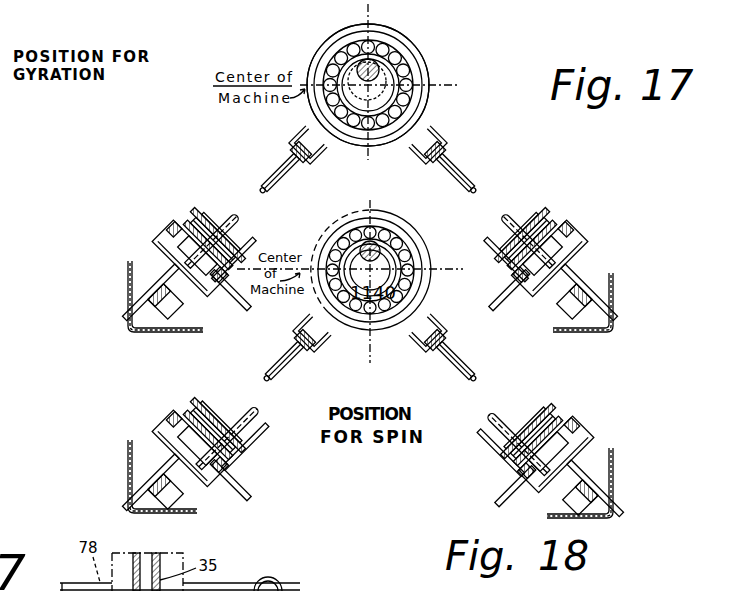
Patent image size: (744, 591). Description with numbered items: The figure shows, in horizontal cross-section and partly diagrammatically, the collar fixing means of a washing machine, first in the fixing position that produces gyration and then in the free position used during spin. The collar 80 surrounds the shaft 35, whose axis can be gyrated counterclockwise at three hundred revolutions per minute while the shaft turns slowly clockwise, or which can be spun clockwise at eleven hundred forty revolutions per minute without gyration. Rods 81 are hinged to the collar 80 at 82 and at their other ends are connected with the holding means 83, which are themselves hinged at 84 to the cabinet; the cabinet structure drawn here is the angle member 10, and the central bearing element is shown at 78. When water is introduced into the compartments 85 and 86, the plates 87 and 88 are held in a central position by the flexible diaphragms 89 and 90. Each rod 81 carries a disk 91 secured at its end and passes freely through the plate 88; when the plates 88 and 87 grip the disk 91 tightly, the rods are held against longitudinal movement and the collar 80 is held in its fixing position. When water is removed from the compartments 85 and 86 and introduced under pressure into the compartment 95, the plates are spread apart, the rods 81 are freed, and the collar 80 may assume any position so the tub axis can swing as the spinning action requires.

In FIG. 17, the frame angle bracket 10 is at (180, 333).
In FIG. 18, the frame angle bracket 10 is at (155, 513).
In FIG. 17, the shaft 35 is at (378, 68).
In FIG. 18, the shaft 35 is at (380, 258).
In FIG. 17, the bearing hub 78 is at (347, 77).
In FIG. 18, the bearing hub 78 is at (350, 262).
In FIG. 17, the collar 80 is at (428, 78).
In FIG. 18, the collar 80 is at (416, 254).
In FIG. 17, the rods 81 is at (270, 172).
In FIG. 18, the rods 81 is at (270, 380).
In FIG. 17, the hinge 82 is at (290, 136).
In FIG. 18, the hinge 82 is at (418, 357).
In FIG. 17, the holding means 83 is at (186, 230).
In FIG. 18, the holding means 83 is at (186, 418).
In FIG. 17, the hinge 84 is at (150, 285).
In FIG. 18, the hinge 84 is at (150, 470).
In FIG. 17, the compartment 85 is at (160, 265).
In FIG. 17, the compartment 86 is at (203, 230).
In FIG. 17, the plate 87 is at (206, 225).
In FIG. 18, the plate 87 is at (235, 490).
In FIG. 17, the plate 88 is at (247, 228).
In FIG. 18, the plate 88 is at (252, 430).
In FIG. 17, the flexible diaphragm 89 is at (212, 305).
In FIG. 18, the flexible diaphragm 89 is at (212, 482).
In FIG. 17, the flexible diaphragm 90 is at (257, 252).
In FIG. 18, the flexible diaphragm 90 is at (230, 425).
In FIG. 17, the disk 91 is at (210, 230).
In FIG. 18, the disk 91 is at (228, 458).
In FIG. 17, the compartment 95 is at (220, 302).
In FIG. 18, the compartment 95 is at (245, 470).